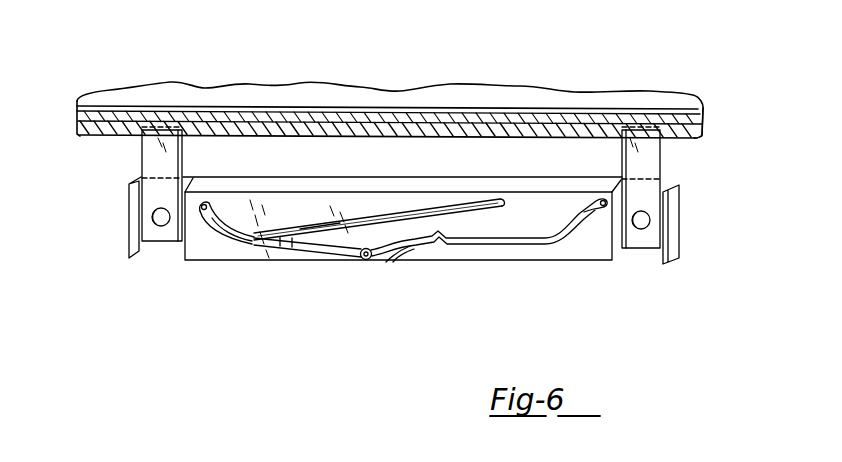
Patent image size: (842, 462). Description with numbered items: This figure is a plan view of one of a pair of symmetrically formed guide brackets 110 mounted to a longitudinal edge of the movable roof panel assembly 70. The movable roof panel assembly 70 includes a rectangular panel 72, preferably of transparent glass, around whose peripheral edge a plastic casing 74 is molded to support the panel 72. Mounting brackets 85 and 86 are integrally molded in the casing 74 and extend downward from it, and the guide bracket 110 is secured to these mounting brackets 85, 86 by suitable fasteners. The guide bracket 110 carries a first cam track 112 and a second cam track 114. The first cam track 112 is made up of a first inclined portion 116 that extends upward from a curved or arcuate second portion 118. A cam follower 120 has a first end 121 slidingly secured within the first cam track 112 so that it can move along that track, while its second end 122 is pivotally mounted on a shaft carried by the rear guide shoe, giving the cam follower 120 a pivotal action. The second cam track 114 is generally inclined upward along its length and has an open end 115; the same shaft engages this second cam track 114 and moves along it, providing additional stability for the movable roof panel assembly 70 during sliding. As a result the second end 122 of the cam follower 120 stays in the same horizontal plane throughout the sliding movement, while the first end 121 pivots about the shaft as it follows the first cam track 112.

The movable roof panel assembly 70 is at (352, 98).
The panel 72 is at (242, 111).
The casing 74 is at (273, 132).
The mounting bracket 85 is at (152, 152).
The mounting bracket 86 is at (646, 163).
The guide bracket 110 is at (441, 266).
The first cam track 112 is at (380, 217).
The second cam track 114 is at (557, 250).
The open end 115 is at (388, 262).
The first inclined portion 116 is at (323, 225).
The arcuate second portion 118 is at (221, 212).
The cam follower 120 is at (307, 252).
The first end of cam follower 121 is at (267, 262).
The second end of cam follower 122 is at (367, 262).